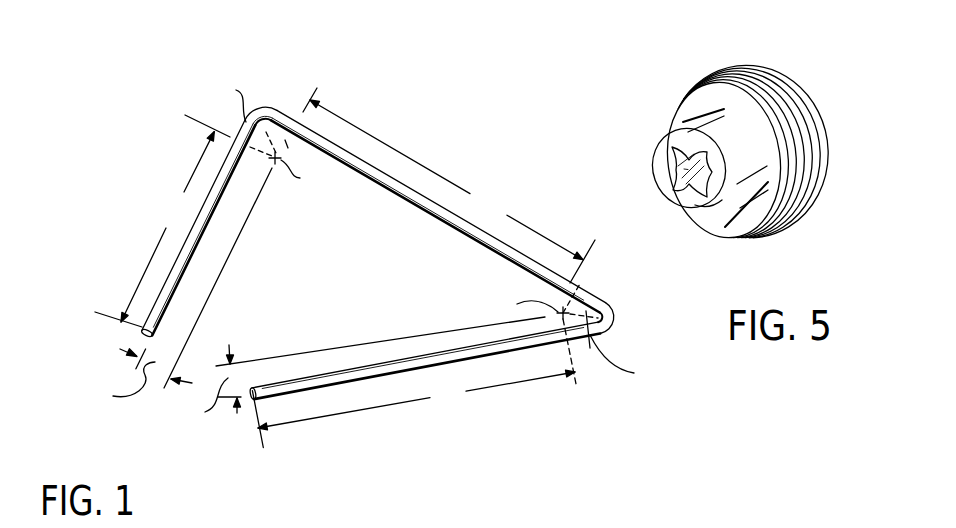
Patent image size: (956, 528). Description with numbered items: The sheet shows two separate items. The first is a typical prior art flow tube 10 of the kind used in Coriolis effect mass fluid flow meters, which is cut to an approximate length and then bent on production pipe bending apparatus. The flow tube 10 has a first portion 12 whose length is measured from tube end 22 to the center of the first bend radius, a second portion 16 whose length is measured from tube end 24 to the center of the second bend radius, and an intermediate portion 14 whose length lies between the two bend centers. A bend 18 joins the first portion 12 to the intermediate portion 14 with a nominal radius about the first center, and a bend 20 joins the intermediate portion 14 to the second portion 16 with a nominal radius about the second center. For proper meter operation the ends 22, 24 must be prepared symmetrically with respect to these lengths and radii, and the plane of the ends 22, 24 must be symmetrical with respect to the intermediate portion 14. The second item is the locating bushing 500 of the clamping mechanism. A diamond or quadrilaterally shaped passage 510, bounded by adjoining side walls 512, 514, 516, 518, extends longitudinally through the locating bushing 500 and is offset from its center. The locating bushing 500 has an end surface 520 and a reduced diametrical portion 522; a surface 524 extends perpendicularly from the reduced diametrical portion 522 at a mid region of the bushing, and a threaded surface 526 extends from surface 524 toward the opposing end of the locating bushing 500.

In FIG. 1, the flow tube 10 is at (105, 165).
In FIG. 1, the first portion 12 is at (178, 282).
In FIG. 1, the intermediate portion 14 is at (470, 237).
In FIG. 1, the second portion 16 is at (378, 364).
In FIG. 1, the bend 18 is at (277, 110).
In FIG. 1, the bend 20 is at (614, 319).
In FIG. 1, the tube end 22 is at (141, 333).
In FIG. 1, the tube end 24 is at (255, 399).
In FIG. 5, the locating bushing 500 is at (622, 70).
In FIG. 5, the passage 510 is at (689, 170).
In FIG. 5, the side wall 512 is at (675, 133).
In FIG. 5, the side wall 514 is at (677, 128).
In FIG. 5, the side wall 516 is at (720, 208).
In FIG. 5, the side wall 518 is at (672, 191).
In FIG. 5, the end surface 520 is at (755, 210).
In FIG. 5, the reduced diametrical portion 522 is at (735, 140).
In FIG. 5, the surface 524 is at (797, 178).
In FIG. 5, the threaded surface 526 is at (783, 138).